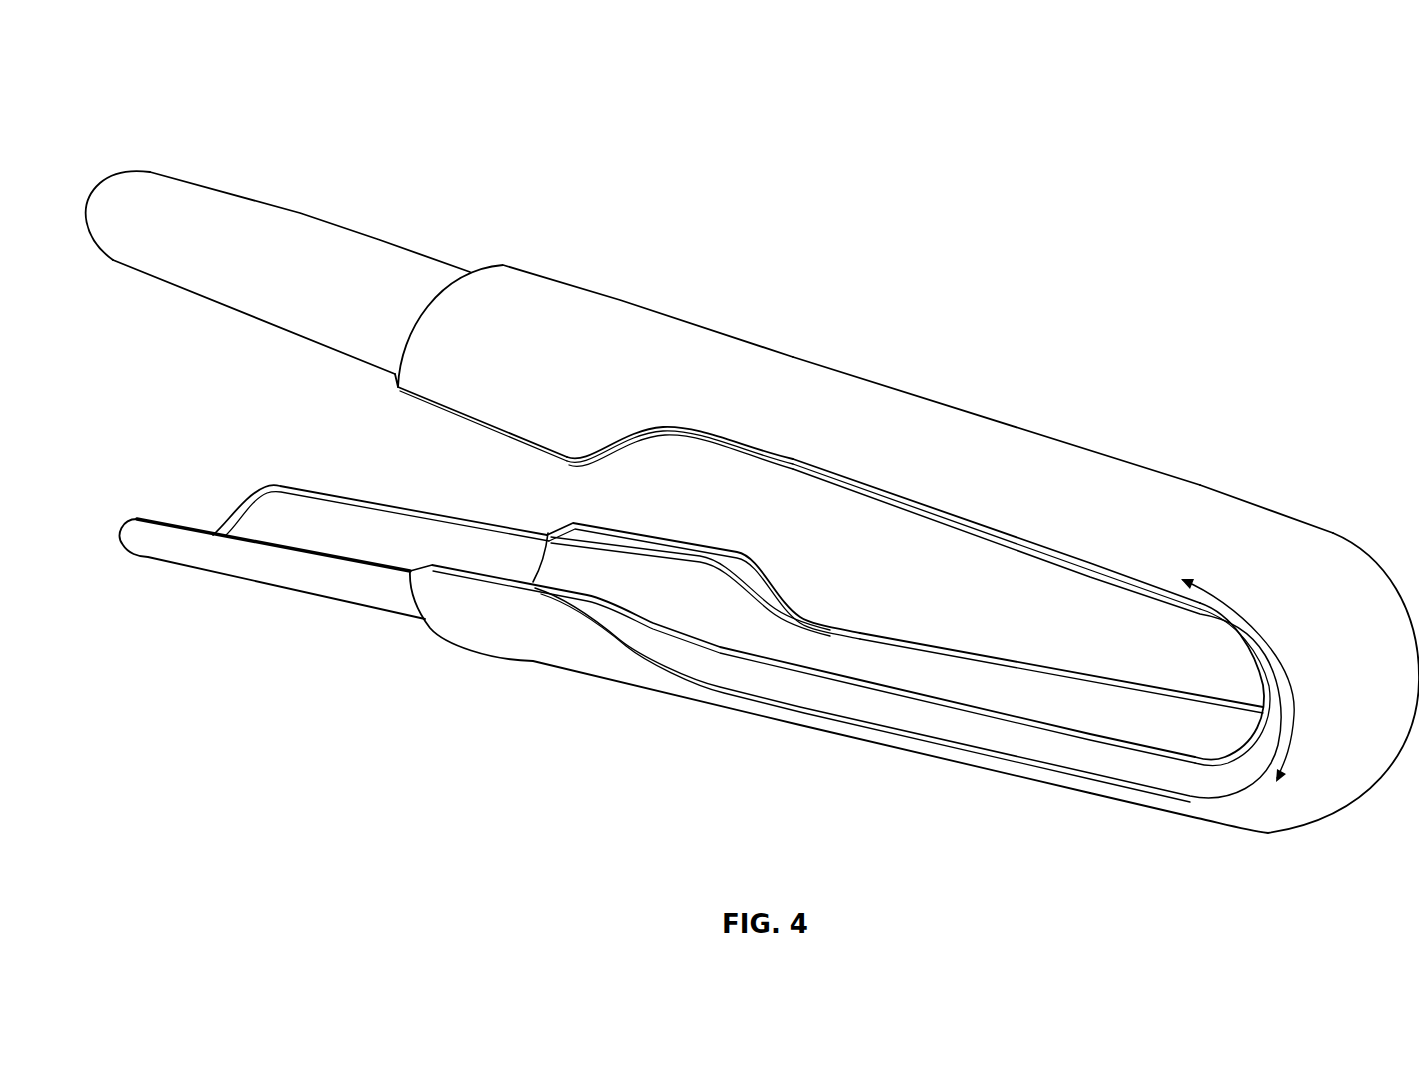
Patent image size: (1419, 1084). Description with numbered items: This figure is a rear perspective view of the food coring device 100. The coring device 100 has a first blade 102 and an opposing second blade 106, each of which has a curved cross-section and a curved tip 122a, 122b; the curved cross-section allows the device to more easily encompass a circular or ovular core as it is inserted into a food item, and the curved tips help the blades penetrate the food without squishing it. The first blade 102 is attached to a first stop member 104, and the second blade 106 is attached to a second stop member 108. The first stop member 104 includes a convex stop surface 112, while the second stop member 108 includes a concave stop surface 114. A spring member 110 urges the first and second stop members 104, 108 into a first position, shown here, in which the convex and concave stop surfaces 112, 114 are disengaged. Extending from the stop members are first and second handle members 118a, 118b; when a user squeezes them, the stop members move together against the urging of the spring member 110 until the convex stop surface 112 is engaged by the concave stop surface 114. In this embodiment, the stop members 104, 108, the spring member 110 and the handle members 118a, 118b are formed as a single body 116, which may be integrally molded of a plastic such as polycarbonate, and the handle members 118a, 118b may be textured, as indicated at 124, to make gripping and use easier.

The coring device 100 is at (170, 110).
The first blade 102 is at (373, 225).
The first stop member 104 is at (558, 315).
The second blade 106 is at (273, 583).
The second stop member 108 is at (580, 677).
The spring member 110 is at (1360, 767).
The convex stop surface 112 is at (593, 453).
The concave stop surface 114 is at (547, 595).
The body 116 is at (1138, 463).
The first handle member 118a is at (1010, 460).
The second handle member 118b is at (918, 722).
The curved tip 122a is at (118, 193).
The curved tip 122b is at (237, 523).
The texture 124 is at (895, 405).